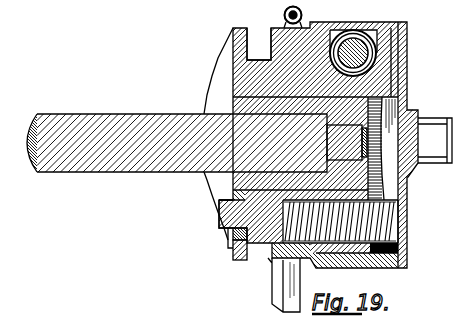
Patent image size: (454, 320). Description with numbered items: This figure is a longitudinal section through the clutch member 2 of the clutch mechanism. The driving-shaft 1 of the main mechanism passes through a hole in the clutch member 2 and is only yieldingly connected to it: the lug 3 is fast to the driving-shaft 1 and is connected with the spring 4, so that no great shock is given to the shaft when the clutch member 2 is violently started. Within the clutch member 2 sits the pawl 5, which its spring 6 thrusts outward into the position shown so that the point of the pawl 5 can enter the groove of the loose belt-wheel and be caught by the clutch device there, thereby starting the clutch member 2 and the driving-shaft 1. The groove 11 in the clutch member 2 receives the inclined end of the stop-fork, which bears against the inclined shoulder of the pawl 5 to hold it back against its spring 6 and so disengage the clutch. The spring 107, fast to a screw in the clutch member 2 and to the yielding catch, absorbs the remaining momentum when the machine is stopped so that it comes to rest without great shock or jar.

The driving-shaft 1 is at (177, 143).
The clutch member 2 is at (222, 68).
The lug 3 is at (298, 132).
The spring 4 is at (376, 52).
The pawl 5 is at (242, 214).
The spring 6 is at (406, 234).
The groove 11 is at (259, 58).
The spring 107 is at (303, 14).